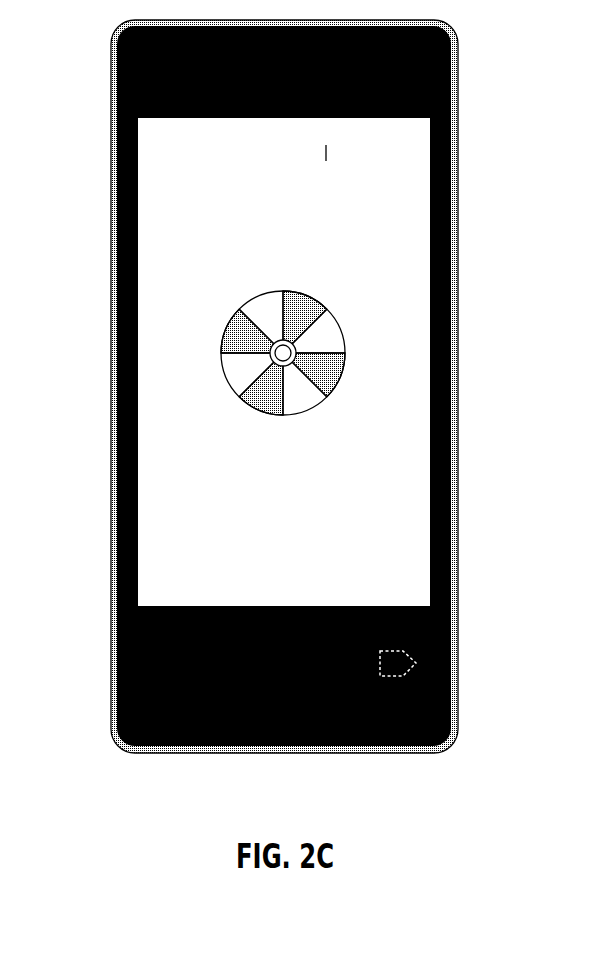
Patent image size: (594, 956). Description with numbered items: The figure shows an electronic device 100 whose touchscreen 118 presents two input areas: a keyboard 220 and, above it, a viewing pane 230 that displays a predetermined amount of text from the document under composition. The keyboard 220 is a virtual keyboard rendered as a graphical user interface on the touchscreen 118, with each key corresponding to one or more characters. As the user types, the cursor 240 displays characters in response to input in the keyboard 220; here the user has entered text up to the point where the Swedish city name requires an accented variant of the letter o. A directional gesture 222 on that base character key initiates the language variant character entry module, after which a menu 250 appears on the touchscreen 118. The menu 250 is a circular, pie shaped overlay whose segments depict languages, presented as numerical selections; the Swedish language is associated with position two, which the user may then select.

The electronic device 100 is at (106, 88).
The touchscreen 118 is at (170, 523).
The keyboard 220 is at (120, 656).
The directional gesture 222 is at (444, 618).
The viewing pane 230 is at (170, 243).
The cursor 240 is at (318, 143).
The menu 250 is at (213, 355).